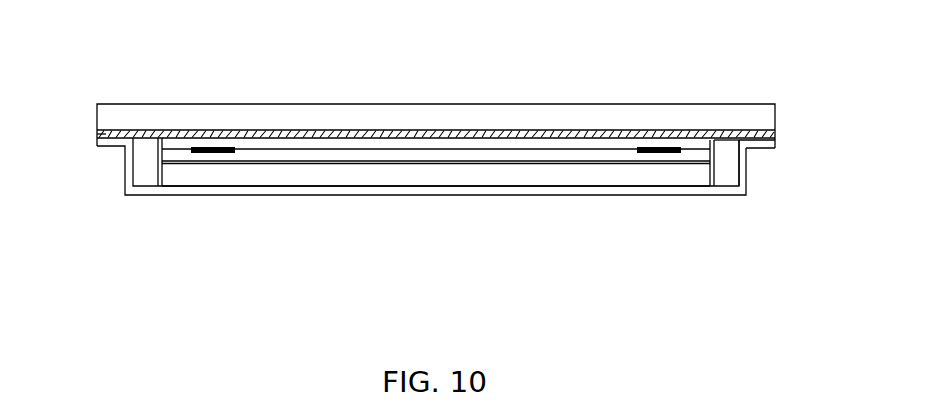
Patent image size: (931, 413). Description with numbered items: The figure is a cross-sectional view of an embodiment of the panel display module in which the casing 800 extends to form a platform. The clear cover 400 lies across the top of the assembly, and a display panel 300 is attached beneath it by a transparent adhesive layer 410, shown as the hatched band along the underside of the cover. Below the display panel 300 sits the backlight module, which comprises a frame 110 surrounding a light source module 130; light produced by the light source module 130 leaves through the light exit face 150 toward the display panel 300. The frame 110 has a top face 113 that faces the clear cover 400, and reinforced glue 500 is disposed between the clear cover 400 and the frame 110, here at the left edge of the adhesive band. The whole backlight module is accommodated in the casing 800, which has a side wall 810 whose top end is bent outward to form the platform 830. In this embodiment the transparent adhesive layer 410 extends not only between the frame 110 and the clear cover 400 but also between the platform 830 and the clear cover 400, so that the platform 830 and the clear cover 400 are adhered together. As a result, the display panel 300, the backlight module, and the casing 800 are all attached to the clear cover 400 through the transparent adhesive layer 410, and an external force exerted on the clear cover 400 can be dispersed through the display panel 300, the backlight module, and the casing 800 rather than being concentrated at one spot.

The frame 110 is at (728, 178).
The top face of the frame 113 is at (726, 140).
The light source module 130 is at (422, 178).
The light exit face 150 is at (344, 161).
The display panel 300 is at (271, 133).
The clear cover 400 is at (578, 118).
The transparent adhesive layer 410 is at (478, 131).
The reinforced glue 500 is at (100, 134).
The casing 800 is at (515, 188).
The side wall 810 is at (743, 168).
The platform 830 is at (759, 141).